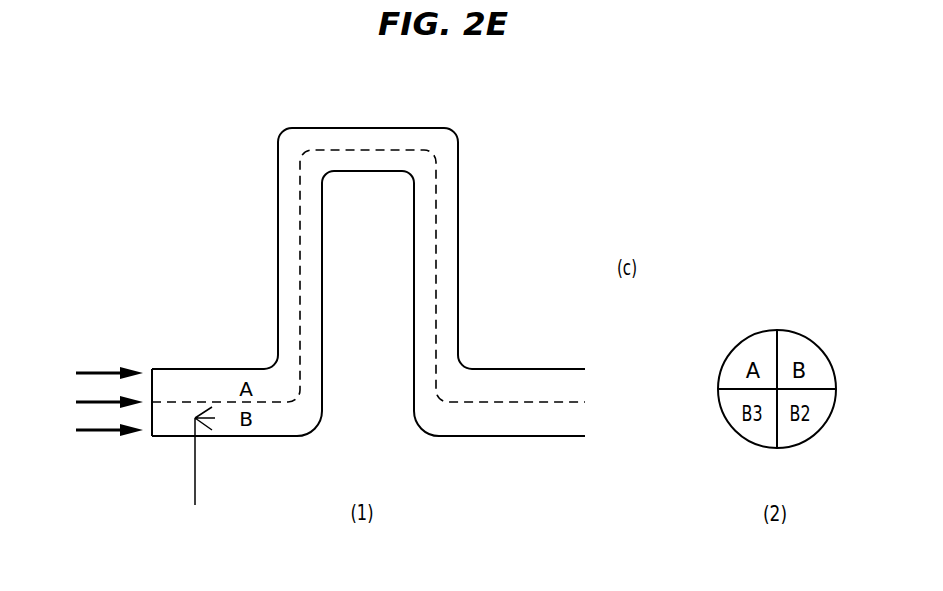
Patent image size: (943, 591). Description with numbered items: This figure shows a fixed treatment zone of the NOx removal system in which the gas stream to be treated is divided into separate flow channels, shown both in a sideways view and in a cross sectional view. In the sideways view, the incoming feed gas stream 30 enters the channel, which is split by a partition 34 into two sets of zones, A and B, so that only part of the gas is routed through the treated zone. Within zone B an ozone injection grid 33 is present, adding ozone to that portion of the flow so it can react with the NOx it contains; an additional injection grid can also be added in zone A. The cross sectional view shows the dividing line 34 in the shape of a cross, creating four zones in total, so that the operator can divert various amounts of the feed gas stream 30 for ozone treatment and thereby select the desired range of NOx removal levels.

The fluid flow 30 is at (98, 401).
The ozone injection grid 33 is at (203, 428).
The partition 34 is at (382, 150).